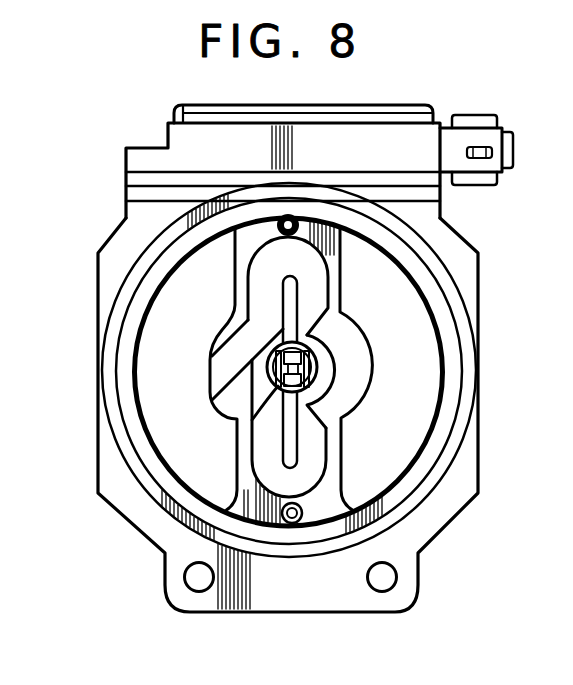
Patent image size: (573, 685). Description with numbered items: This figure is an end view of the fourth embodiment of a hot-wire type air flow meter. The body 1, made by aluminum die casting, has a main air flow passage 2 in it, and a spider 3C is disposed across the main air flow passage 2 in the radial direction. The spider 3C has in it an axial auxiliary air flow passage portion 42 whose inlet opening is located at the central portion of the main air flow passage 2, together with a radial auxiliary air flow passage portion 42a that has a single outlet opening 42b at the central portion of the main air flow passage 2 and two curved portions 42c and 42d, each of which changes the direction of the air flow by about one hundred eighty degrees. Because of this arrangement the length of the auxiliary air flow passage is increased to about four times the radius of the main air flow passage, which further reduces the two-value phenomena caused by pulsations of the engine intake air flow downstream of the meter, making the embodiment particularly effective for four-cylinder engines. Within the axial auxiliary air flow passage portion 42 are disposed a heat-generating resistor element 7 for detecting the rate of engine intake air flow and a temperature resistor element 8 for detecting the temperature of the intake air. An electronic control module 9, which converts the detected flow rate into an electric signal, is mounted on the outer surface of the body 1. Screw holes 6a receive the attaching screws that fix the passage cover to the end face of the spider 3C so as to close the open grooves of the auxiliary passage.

The body 1 is at (408, 563).
The main air flow passage 2 is at (168, 348).
The spider 3C is at (233, 297).
The screw holes 6a is at (299, 229).
The heat-generating resistor element 7 is at (342, 440).
The temperature resistor element 8 is at (340, 317).
The electronic control module 9 is at (169, 124).
The axial auxiliary air flow passage portion 42 is at (293, 394).
The radial auxiliary air flow passage portion 42a is at (343, 353).
The outlet opening 42b is at (198, 388).
The curved portion 42c is at (318, 486).
The curved portion 42d is at (280, 252).